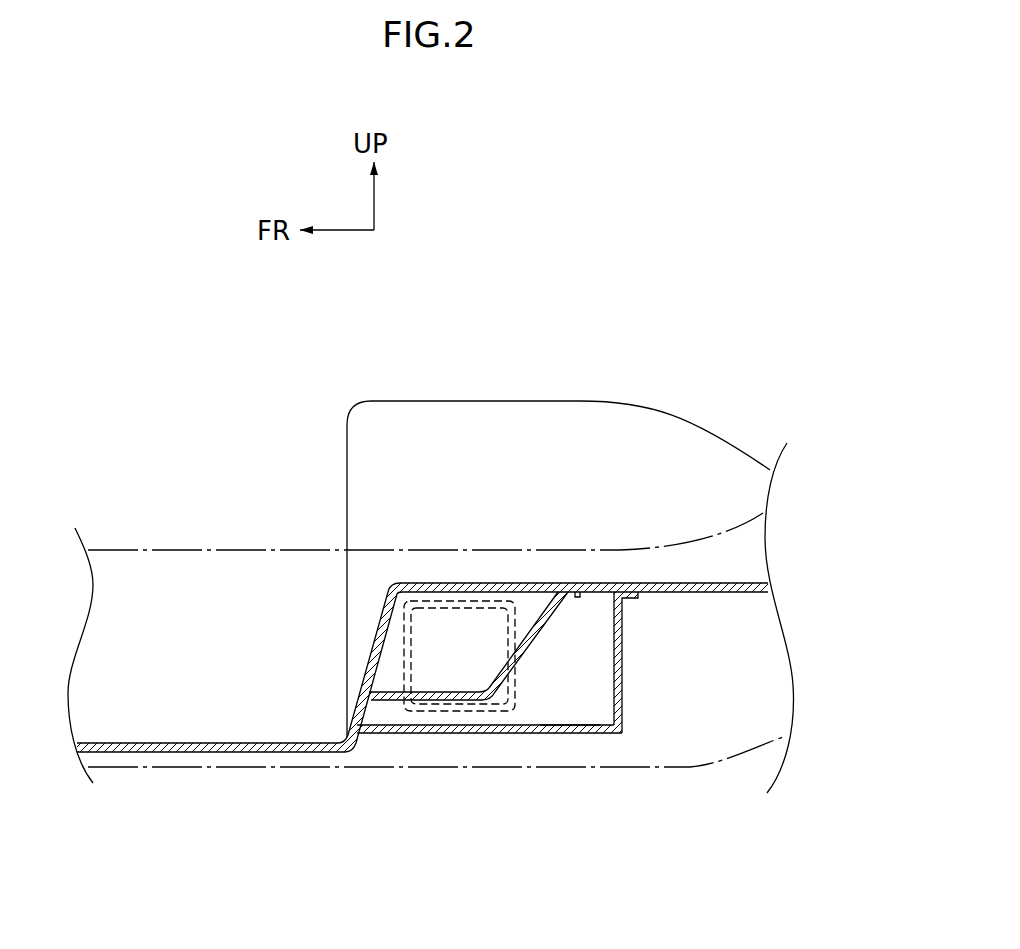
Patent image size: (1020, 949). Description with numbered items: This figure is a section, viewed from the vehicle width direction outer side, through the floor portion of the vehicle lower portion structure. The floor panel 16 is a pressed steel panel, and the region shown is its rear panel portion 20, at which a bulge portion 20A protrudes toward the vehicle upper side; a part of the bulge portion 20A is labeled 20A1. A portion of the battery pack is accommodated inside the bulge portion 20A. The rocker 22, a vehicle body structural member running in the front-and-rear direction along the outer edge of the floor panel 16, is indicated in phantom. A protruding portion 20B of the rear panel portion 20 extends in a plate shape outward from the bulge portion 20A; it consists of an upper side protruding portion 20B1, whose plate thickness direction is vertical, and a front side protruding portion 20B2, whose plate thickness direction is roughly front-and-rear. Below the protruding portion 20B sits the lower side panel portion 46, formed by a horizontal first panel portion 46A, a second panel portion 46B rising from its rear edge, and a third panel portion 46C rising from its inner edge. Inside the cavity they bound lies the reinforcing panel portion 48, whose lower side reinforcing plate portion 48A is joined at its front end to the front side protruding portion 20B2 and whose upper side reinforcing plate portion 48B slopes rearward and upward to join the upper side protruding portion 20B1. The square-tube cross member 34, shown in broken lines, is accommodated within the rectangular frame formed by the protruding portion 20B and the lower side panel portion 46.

The floor panel 16 is at (466, 483).
The rear panel portion 20 is at (633, 297).
The bulge portion 20A is at (488, 398).
The inclined wall 20A1 is at (532, 445).
The protruding portion 20B is at (712, 582).
The upper side protruding portion 20B1 is at (648, 598).
The front side protruding portion 20B2 is at (380, 613).
The rocker 22 is at (182, 547).
The cross member 34 is at (427, 597).
The lower side panel portion 46 is at (648, 678).
The first panel portion 46A is at (495, 733).
The second panel portion 46B is at (622, 700).
The third panel portion 46C is at (547, 693).
The reinforcing panel portion 48 is at (540, 630).
The lower side reinforcing plate portion 48A is at (393, 700).
The upper side reinforcing plate portion 48B is at (528, 583).